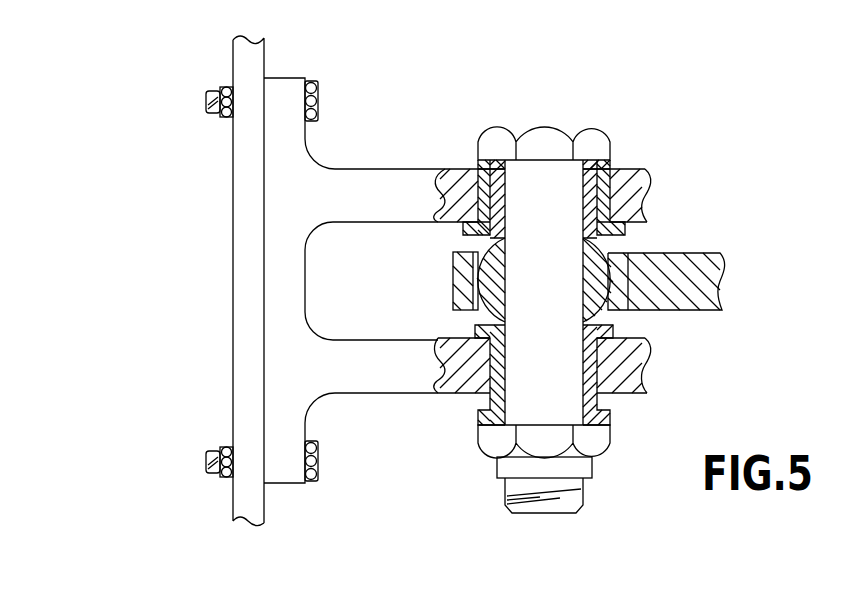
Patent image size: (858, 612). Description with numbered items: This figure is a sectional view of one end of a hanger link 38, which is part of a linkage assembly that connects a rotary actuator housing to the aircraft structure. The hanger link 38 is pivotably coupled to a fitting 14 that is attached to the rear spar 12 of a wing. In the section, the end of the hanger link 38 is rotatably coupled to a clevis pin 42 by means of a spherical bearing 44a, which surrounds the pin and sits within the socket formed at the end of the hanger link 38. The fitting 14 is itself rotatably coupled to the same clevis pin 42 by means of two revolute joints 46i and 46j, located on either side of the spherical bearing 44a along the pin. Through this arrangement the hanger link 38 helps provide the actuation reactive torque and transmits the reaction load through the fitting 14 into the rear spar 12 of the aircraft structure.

The rear spar 12 is at (248, 300).
The fitting 14 is at (363, 182).
The hanger link 38 is at (703, 267).
The clevis pin 42 is at (570, 128).
The spherical bearing 44a is at (603, 275).
The revolute joint 46i is at (600, 200).
The revolute joint 46j is at (593, 373).